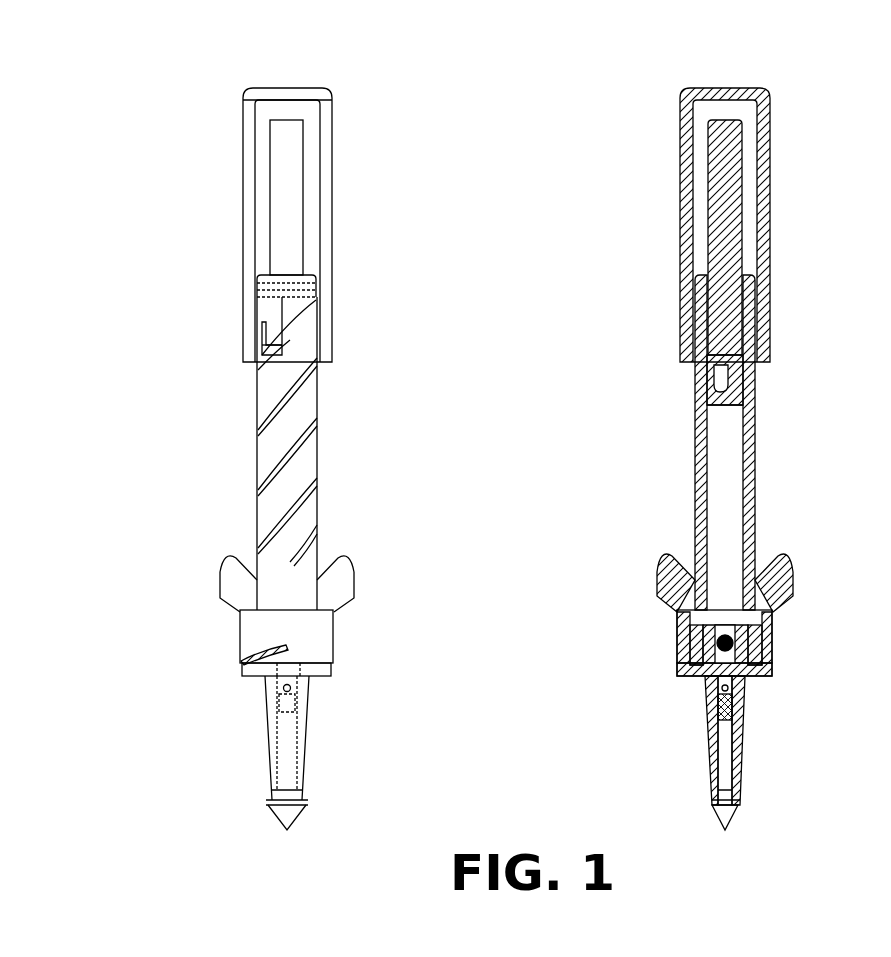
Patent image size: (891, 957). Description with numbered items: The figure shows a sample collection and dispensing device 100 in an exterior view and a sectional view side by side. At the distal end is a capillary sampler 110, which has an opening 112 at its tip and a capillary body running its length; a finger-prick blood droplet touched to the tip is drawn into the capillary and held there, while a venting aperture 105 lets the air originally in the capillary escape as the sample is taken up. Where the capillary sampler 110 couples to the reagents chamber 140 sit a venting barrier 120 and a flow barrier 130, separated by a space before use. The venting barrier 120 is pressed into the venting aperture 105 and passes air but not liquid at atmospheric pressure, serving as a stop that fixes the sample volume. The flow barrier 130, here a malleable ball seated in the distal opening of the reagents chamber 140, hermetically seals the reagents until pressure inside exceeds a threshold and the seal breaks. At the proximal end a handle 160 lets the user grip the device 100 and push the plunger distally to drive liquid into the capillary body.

The sample collection and dispensing device 100 is at (176, 98).
The handle assembly portion 160 is at (246, 180).
The venting aperture 105 is at (278, 687).
The capillary sampler 110 is at (270, 742).
The reagents chamber 140 is at (735, 476).
The flow barrier 130 is at (772, 630).
The venting barrier 120 is at (755, 703).
The opening 112 is at (738, 836).